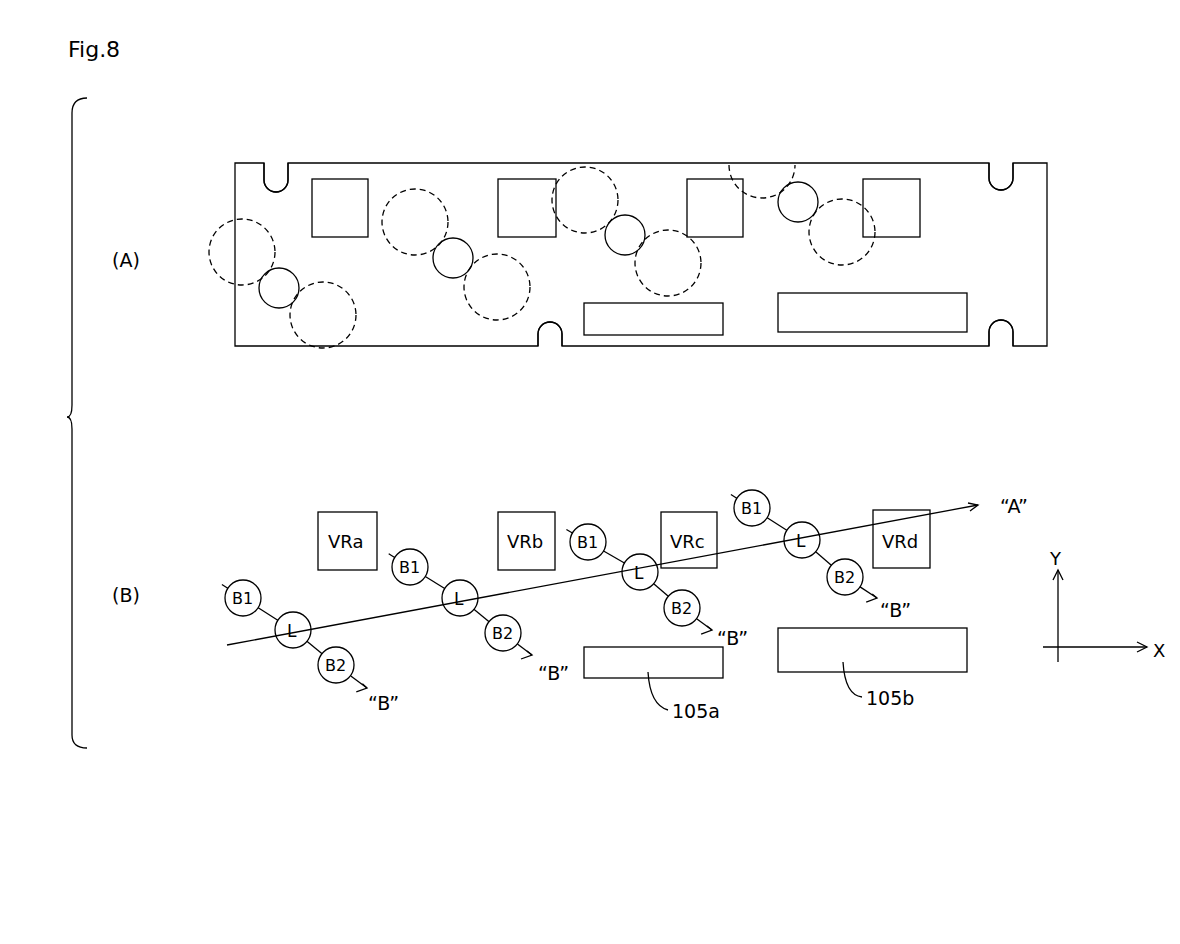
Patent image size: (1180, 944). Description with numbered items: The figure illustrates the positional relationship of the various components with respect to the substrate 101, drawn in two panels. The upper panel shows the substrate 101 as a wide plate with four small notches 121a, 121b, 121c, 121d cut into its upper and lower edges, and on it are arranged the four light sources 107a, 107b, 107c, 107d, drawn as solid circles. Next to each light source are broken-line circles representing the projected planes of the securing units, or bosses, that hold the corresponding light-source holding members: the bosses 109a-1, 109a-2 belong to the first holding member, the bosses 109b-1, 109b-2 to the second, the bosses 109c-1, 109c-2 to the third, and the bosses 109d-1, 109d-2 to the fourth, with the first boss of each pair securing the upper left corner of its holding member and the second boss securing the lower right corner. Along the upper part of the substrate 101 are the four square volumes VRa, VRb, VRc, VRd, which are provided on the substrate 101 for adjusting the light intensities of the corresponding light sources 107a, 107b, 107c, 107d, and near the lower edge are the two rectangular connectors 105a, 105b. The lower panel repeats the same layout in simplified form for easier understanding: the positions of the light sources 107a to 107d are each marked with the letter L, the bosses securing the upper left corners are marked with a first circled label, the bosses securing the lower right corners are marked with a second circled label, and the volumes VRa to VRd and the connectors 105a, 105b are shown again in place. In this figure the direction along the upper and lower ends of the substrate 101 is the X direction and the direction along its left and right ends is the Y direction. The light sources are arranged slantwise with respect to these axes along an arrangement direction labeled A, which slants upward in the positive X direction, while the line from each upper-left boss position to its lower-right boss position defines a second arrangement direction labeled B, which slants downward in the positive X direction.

The substrate 101 is at (1047, 197).
The connector 105a is at (630, 325).
The connector 105b is at (822, 323).
The light source 107a is at (276, 300).
The light source 107b is at (452, 278).
The light source 107c is at (615, 240).
The light source 107d is at (792, 213).
The securing unit (boss) 109a-1 is at (213, 262).
The securing unit (boss) 109a-2 is at (315, 348).
The securing unit (boss) 109b-1 is at (403, 253).
The securing unit (boss) 109b-2 is at (485, 318).
The securing unit (boss) 109c-1 is at (595, 168).
The securing unit (boss) 109c-2 is at (668, 230).
The securing unit (boss) 109d-1 is at (772, 178).
The securing unit (boss) 109d-2 is at (870, 233).
The notch a 121a is at (276, 172).
The notch b 121b is at (1000, 180).
The notch c 121c is at (547, 343).
The notch d 121d is at (1001, 336).
The volume VRa is at (343, 200).
The volume VRb is at (532, 200).
The volume VRc is at (715, 180).
The volume VRd is at (890, 180).